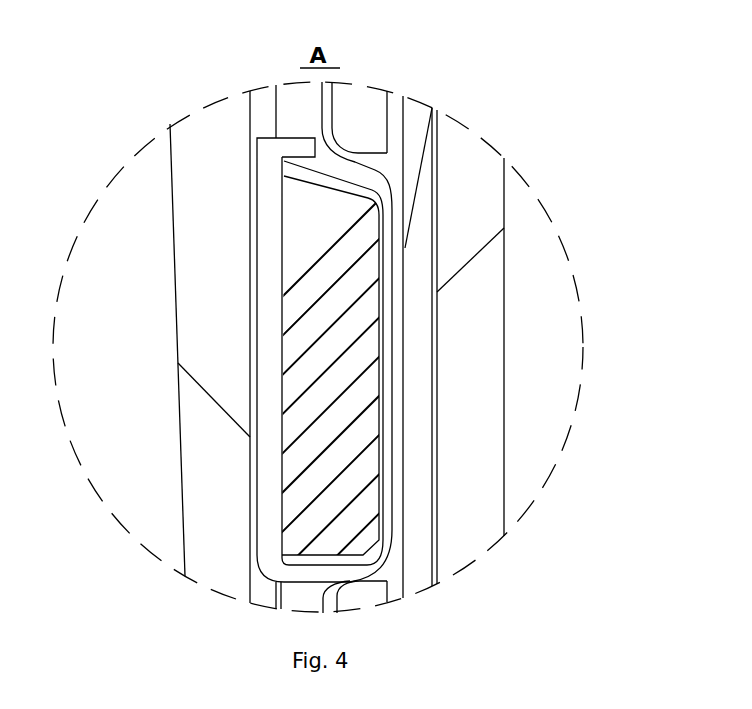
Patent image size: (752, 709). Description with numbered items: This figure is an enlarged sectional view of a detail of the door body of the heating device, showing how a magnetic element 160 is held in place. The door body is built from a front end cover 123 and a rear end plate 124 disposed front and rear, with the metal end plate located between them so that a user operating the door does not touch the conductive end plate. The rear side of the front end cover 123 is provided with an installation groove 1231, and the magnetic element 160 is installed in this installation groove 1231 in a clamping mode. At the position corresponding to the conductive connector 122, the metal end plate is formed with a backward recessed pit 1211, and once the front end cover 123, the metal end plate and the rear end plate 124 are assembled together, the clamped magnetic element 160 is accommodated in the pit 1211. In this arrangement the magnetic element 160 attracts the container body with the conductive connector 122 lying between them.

The conductive connector 122 is at (397, 346).
The front end cover 123 is at (186, 284).
The installation groove 1231 is at (267, 348).
The rear end plate 124 is at (393, 152).
The pit 1211 is at (330, 165).
The magnetic element 160 is at (303, 449).